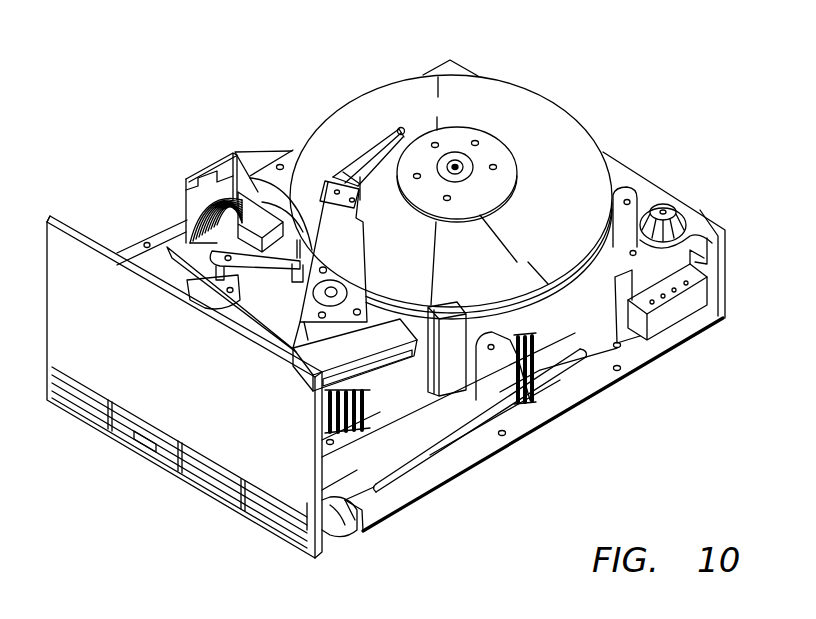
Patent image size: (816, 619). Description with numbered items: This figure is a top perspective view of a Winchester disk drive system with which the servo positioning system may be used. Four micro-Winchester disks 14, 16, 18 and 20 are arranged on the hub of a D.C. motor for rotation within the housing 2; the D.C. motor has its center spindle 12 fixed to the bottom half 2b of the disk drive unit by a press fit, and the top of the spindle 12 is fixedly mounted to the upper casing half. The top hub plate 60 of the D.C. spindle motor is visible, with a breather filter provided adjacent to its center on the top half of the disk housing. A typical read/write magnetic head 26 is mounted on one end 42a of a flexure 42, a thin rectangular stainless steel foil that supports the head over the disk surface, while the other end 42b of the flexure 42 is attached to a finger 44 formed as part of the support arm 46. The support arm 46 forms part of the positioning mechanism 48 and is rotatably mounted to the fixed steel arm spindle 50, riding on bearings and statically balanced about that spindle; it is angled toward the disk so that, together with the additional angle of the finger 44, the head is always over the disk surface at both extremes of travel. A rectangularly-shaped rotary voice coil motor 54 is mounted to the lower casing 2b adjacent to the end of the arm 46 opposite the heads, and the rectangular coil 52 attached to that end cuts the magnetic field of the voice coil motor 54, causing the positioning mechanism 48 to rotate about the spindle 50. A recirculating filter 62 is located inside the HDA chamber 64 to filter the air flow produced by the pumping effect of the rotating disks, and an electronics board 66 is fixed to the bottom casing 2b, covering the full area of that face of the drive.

The housing 2 is at (448, 412).
The bottom casing 2b is at (365, 474).
The center spindle 12 is at (458, 163).
The micro-Winchester disk 14 is at (575, 148).
The micro-Winchester disk 16 is at (560, 290).
The micro-Winchester disk 18 is at (522, 330).
The micro-Winchester disk 20 is at (525, 395).
The magnetic head 26 is at (393, 110).
The flexure 42 is at (360, 172).
The end of flexure 42a is at (383, 145).
The other end of flexure 42b is at (343, 172).
The finger 44 is at (362, 208).
The support arm 46 is at (357, 252).
The positioning mechanism 48 is at (343, 245).
The arm spindle 50 is at (336, 290).
The rectangular coil 52 is at (390, 482).
The voice coil motor 54 is at (372, 354).
The top hub plate 60 is at (481, 187).
The recirculating filter 62 is at (513, 405).
The HDA chamber 64 is at (143, 203).
The electronics board 66 is at (387, 483).